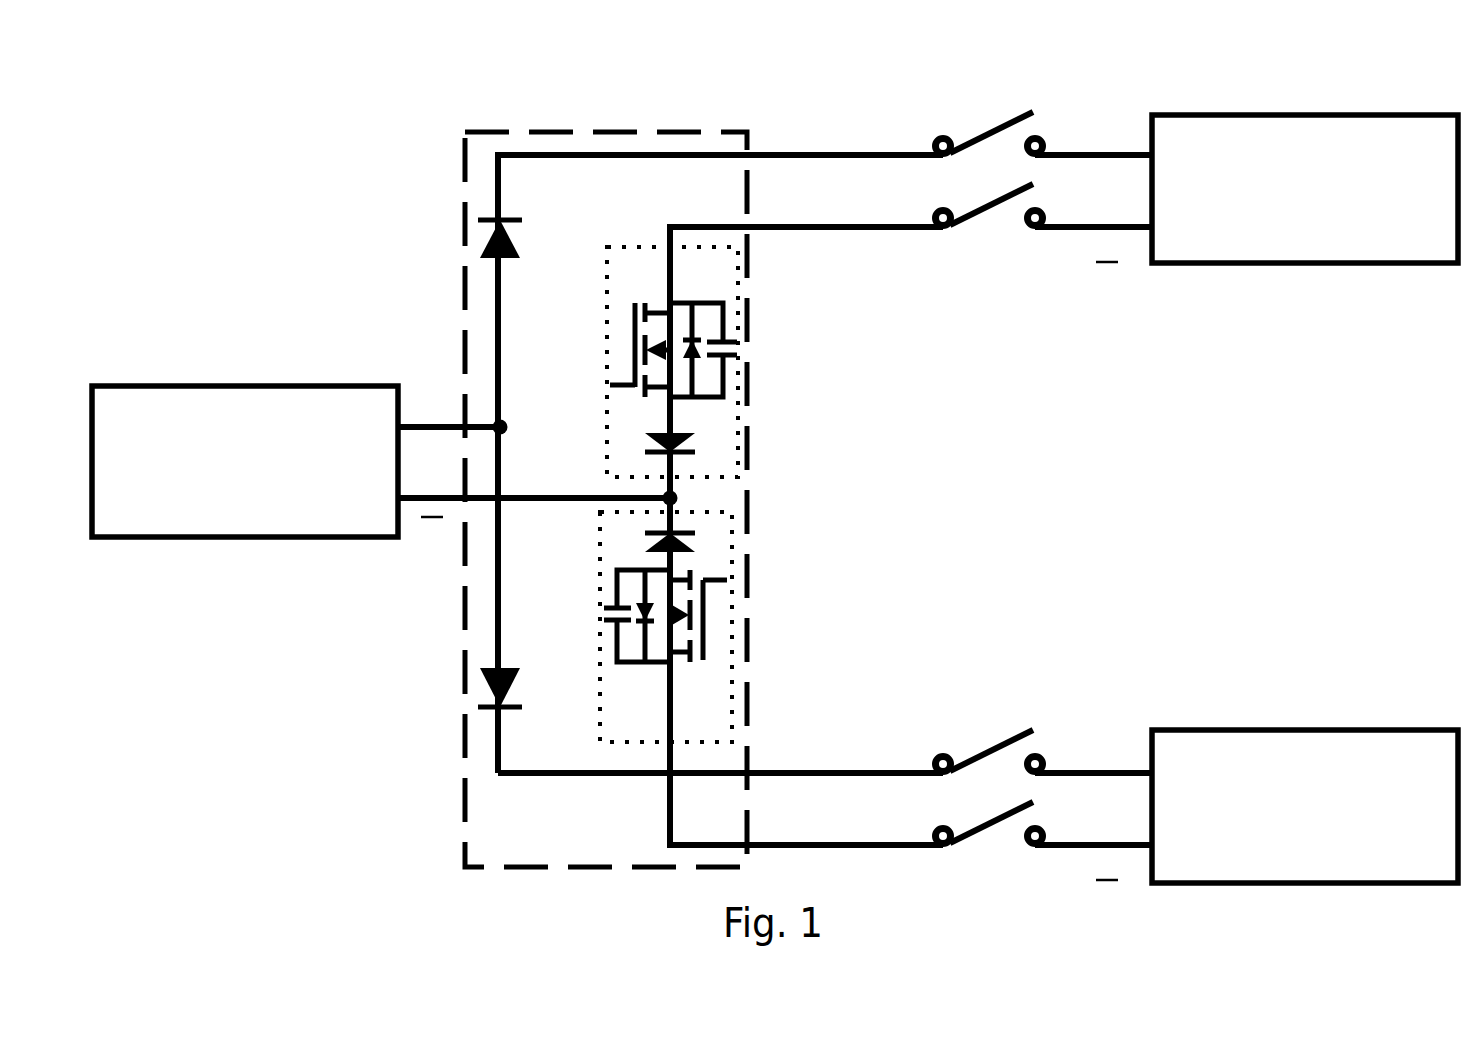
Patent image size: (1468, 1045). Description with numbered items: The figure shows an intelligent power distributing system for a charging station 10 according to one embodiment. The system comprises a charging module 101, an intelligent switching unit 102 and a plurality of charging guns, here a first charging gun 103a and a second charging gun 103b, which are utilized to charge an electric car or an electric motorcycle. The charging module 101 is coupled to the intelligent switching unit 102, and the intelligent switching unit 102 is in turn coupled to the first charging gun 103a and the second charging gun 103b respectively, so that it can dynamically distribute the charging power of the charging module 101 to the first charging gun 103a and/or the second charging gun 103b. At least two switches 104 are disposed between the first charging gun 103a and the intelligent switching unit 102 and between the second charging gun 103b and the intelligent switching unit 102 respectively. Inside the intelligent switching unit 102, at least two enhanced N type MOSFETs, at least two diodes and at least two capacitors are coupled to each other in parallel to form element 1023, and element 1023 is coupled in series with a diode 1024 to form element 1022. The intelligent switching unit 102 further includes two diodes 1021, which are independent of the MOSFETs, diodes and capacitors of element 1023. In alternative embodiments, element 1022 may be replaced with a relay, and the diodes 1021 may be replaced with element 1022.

The intelligent power distributing system for the charging station 10 is at (277, 196).
The charging module 101 is at (283, 397).
The intelligent switching unit 102 is at (690, 450).
The diode 1021 is at (519, 218).
The element 1022 is at (607, 397).
The element 1023 is at (725, 325).
The diode 1024 is at (693, 437).
The first charging gun 103a is at (1177, 112).
The second charging gun 103b is at (1177, 728).
The switch 104 is at (973, 138).